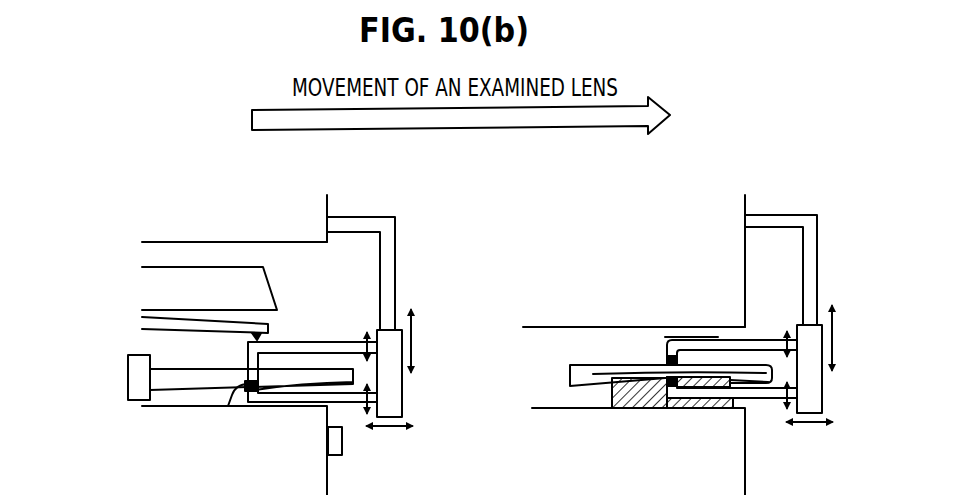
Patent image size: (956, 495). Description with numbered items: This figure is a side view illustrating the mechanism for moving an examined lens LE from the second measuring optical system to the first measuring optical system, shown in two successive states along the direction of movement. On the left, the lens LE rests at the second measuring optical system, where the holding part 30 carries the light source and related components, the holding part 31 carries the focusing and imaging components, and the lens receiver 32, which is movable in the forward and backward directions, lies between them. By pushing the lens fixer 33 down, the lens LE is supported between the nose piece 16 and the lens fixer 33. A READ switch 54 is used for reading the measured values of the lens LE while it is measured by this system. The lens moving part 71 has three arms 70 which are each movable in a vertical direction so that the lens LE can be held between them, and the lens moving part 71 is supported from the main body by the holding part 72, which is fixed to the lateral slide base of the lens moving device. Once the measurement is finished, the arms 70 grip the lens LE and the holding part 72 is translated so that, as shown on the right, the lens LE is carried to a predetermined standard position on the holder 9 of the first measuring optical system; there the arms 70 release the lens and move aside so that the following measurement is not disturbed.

The holder 9 is at (532, 408).
The nose piece 16 is at (240, 402).
The holding part 30 is at (290, 444).
The holding part 31 is at (160, 288).
The lens receiver 32 is at (137, 377).
The lens fixer 33 is at (277, 322).
The READ switch 54 is at (342, 440).
The arms 70 is at (340, 400).
The lens moving part 71 is at (390, 388).
The holding part 72 is at (390, 252).
The lens LE is at (212, 372).